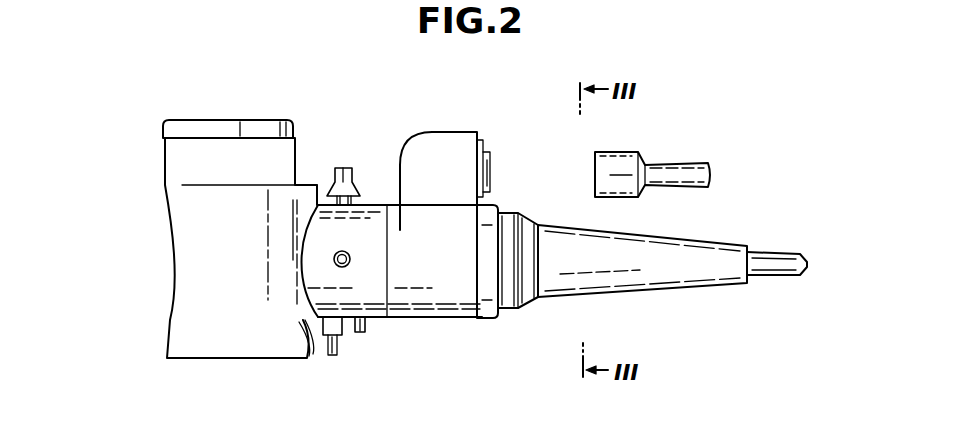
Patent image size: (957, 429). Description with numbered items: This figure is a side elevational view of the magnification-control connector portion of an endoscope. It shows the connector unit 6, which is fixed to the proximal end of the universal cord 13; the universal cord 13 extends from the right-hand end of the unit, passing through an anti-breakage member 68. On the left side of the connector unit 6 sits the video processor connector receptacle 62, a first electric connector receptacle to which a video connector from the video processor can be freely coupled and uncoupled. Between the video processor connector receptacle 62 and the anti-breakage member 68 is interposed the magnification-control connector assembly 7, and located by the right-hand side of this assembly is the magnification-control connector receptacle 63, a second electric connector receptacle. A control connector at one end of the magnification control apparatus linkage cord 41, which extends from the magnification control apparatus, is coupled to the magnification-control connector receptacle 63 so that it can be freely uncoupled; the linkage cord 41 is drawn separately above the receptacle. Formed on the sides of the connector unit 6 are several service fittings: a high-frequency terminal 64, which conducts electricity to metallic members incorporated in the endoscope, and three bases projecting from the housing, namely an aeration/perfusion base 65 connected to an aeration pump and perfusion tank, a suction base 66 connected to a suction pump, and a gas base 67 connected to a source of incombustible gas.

The connector unit 6 is at (232, 340).
The magnification-control connector assembly 7 is at (443, 165).
The universal cord 13 is at (773, 277).
The magnification control apparatus linkage cord 41 is at (672, 163).
The video processor connector receptacle 62 is at (232, 130).
The magnification-control connector receptacle 63 is at (505, 168).
The high-frequency terminal 64 is at (348, 266).
The aeration/perfusion base 65 is at (331, 356).
The suction base 66 is at (343, 167).
The gas base 67 is at (361, 334).
The anti-breakage member 68 is at (660, 276).